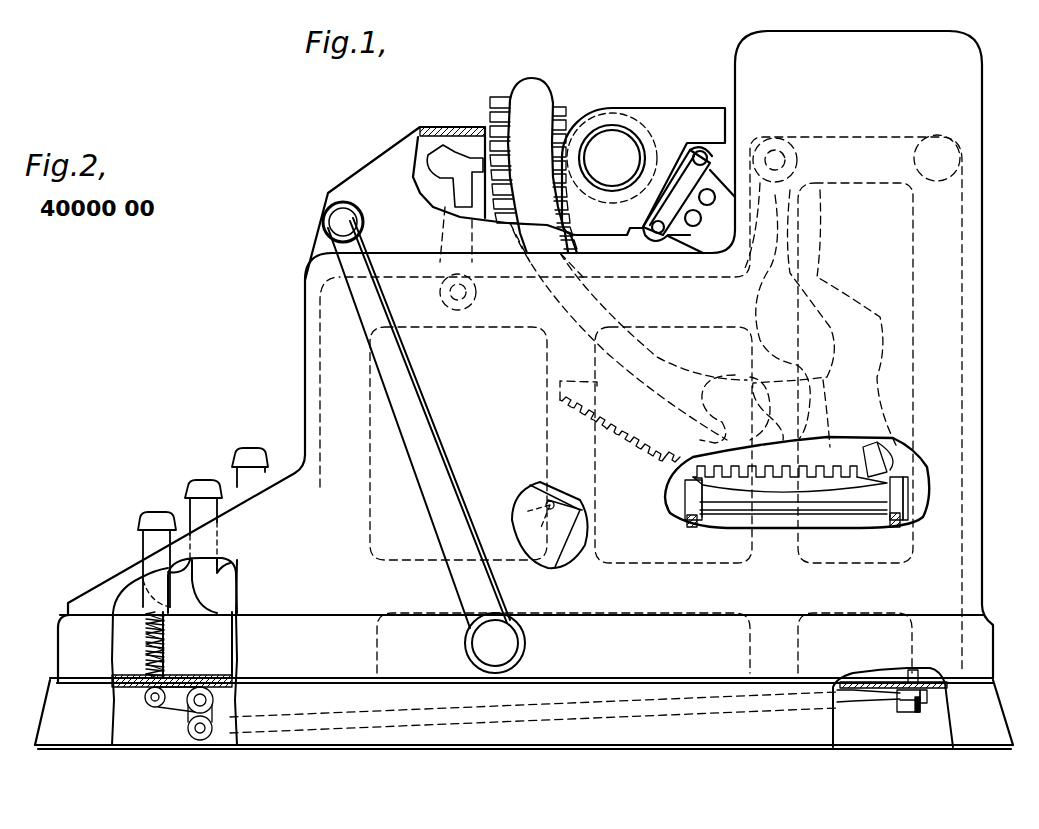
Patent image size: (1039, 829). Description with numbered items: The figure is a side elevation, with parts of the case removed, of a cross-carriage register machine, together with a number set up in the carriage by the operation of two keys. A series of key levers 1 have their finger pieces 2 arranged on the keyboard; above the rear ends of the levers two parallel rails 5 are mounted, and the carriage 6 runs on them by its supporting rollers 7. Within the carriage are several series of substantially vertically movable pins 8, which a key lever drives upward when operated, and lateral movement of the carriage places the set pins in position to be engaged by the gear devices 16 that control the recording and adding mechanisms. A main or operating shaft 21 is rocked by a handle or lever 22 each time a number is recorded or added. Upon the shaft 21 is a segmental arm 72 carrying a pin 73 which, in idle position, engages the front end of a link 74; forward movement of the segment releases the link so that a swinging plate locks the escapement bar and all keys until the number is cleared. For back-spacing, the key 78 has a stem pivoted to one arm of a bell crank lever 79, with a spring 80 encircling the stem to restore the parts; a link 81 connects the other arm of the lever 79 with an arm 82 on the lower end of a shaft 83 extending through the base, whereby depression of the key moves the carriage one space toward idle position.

The key lever 1 is at (202, 585).
The finger piece 2 is at (203, 510).
The rail 5 is at (791, 530).
The carriage 6 is at (793, 504).
The supporting roller 7 is at (908, 498).
The pin 8 is at (794, 498).
The gear devices 16 is at (797, 482).
The main or operating shaft 21 is at (495, 643).
The handle or lever 22 is at (419, 423).
The segmental arm 72 is at (550, 525).
The pin 73 is at (552, 502).
The link 74 is at (582, 510).
The key 78 is at (157, 549).
The bell crank lever 79 is at (172, 705).
The spring 80 is at (163, 642).
The link 81 is at (222, 725).
The arm 82 is at (913, 713).
The shaft 83 is at (913, 683).